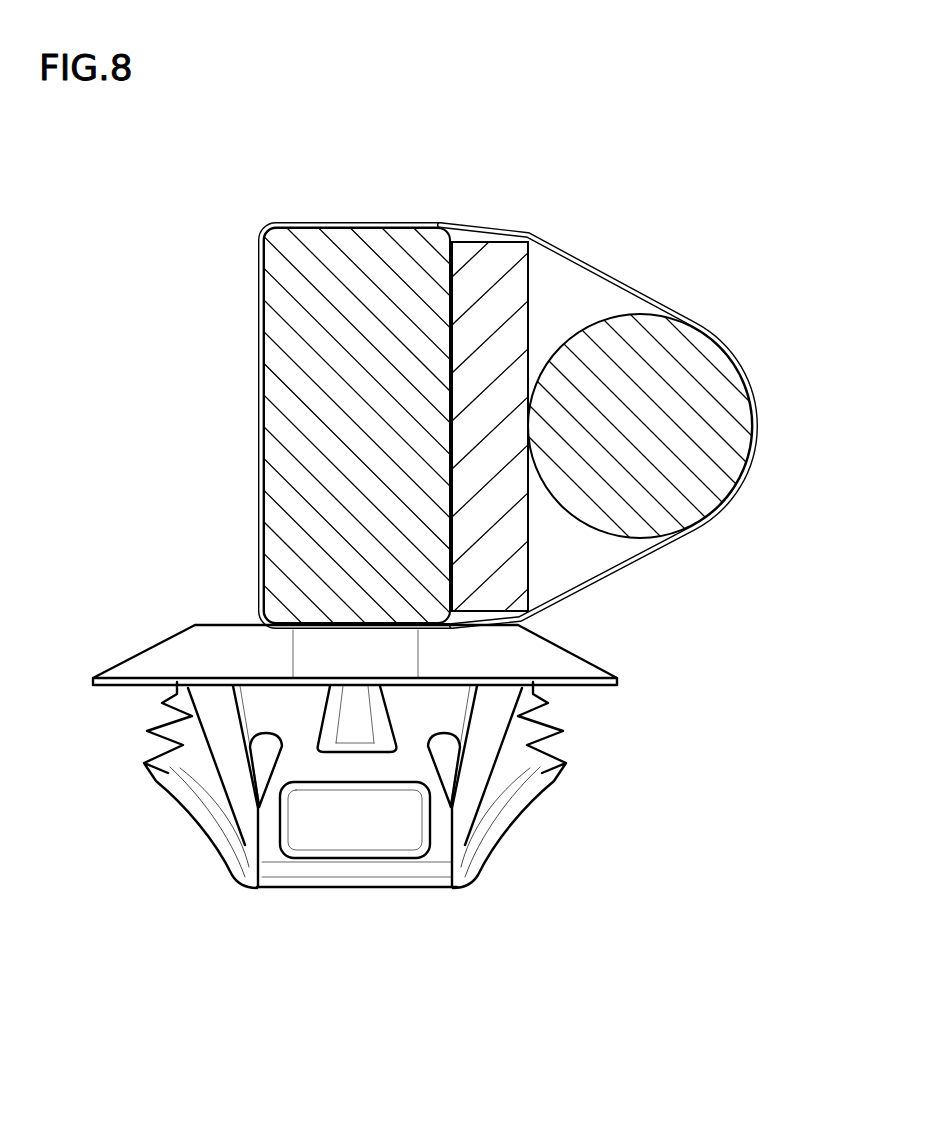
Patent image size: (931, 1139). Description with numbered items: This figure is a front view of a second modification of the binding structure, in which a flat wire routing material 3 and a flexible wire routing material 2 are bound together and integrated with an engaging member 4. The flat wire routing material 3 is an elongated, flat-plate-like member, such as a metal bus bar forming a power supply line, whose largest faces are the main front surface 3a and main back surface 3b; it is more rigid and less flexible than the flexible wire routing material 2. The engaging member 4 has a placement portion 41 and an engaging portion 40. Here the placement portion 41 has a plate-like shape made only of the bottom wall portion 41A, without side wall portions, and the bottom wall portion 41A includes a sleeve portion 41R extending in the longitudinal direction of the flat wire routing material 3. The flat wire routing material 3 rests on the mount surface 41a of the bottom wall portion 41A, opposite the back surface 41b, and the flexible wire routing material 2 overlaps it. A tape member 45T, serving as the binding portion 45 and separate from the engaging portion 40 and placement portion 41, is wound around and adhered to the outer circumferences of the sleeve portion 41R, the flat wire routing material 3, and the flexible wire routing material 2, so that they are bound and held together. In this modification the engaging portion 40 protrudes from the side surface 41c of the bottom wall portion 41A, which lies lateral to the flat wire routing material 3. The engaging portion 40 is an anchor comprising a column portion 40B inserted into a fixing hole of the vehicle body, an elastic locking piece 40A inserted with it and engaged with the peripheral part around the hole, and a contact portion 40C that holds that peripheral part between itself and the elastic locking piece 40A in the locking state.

The flexible wire routing material 2 is at (713, 383).
The flat wire routing material 3 is at (439, 431).
The main front surface 3a is at (530, 288).
The main back surface 3b is at (448, 462).
The engaging member 4 is at (329, 807).
The engaging portion 40 is at (361, 839).
The elastic locking piece 40A is at (160, 775).
The column portion 40B is at (368, 770).
The contact portion 40C is at (157, 660).
The placement portion 41 is at (422, 399).
The sleeve portion 41R is at (355, 222).
The bottom wall portion 41A is at (357, 176).
The mount surface 41a is at (453, 287).
The back surface 41b is at (258, 318).
The side surface 41c is at (367, 630).
The binding portion 45 is at (258, 222).
The tape member 45T is at (645, 290).